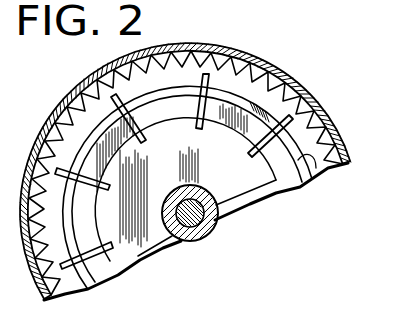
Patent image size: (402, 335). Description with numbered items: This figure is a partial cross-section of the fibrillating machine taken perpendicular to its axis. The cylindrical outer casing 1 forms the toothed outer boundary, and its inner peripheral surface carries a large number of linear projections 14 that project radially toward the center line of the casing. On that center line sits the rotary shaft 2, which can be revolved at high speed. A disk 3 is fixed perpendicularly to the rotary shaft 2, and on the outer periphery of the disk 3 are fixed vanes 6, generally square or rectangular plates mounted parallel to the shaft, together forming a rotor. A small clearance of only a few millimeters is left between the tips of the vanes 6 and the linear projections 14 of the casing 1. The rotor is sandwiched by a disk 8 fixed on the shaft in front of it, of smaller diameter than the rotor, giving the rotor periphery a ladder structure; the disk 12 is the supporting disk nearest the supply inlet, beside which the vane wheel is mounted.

The cylindrical outer casing 1 is at (191, 43).
The rotary shaft 2 is at (200, 236).
The disk 3 is at (235, 194).
The vane 6 is at (249, 155).
The disk 8 is at (287, 188).
The disk 12 is at (322, 173).
The linear projections 14 is at (304, 92).